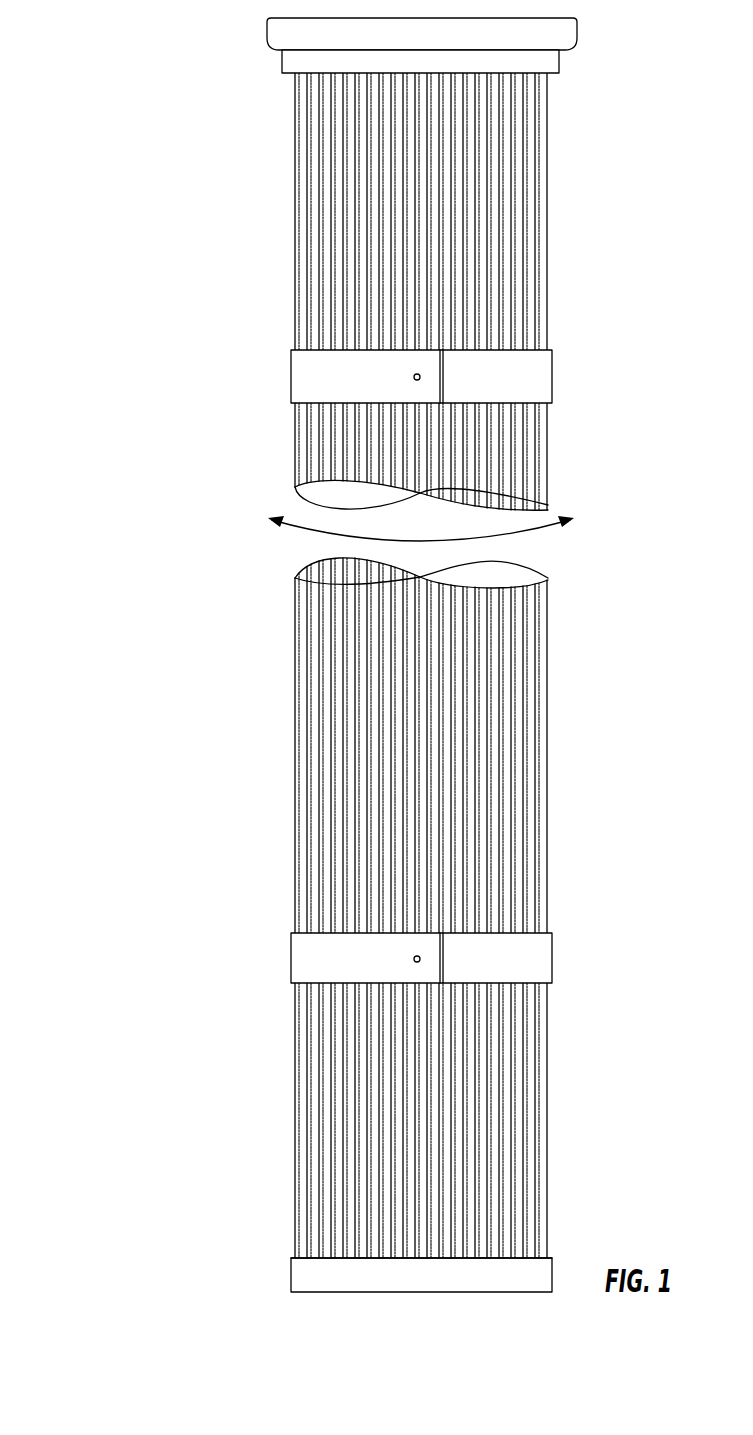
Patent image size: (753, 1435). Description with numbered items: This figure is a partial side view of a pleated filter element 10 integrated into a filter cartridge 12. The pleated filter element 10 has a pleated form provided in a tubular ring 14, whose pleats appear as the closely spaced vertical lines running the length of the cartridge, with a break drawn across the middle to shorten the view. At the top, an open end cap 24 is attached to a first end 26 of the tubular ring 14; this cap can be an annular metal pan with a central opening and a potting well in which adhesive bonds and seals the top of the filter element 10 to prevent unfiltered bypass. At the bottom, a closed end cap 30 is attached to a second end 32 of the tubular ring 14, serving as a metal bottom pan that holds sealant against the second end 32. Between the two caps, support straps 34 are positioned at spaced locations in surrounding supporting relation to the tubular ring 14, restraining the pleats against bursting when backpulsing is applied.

The pleated filter element 10 is at (525, 236).
The filter cartridge 12 is at (150, 47).
The tubular ring 14 is at (435, 524).
The open end cap 24 is at (555, 30).
The first end 26 is at (548, 77).
The closed end cap 30 is at (310, 1275).
The second end 32 is at (293, 1257).
The support strap 34 is at (307, 375).